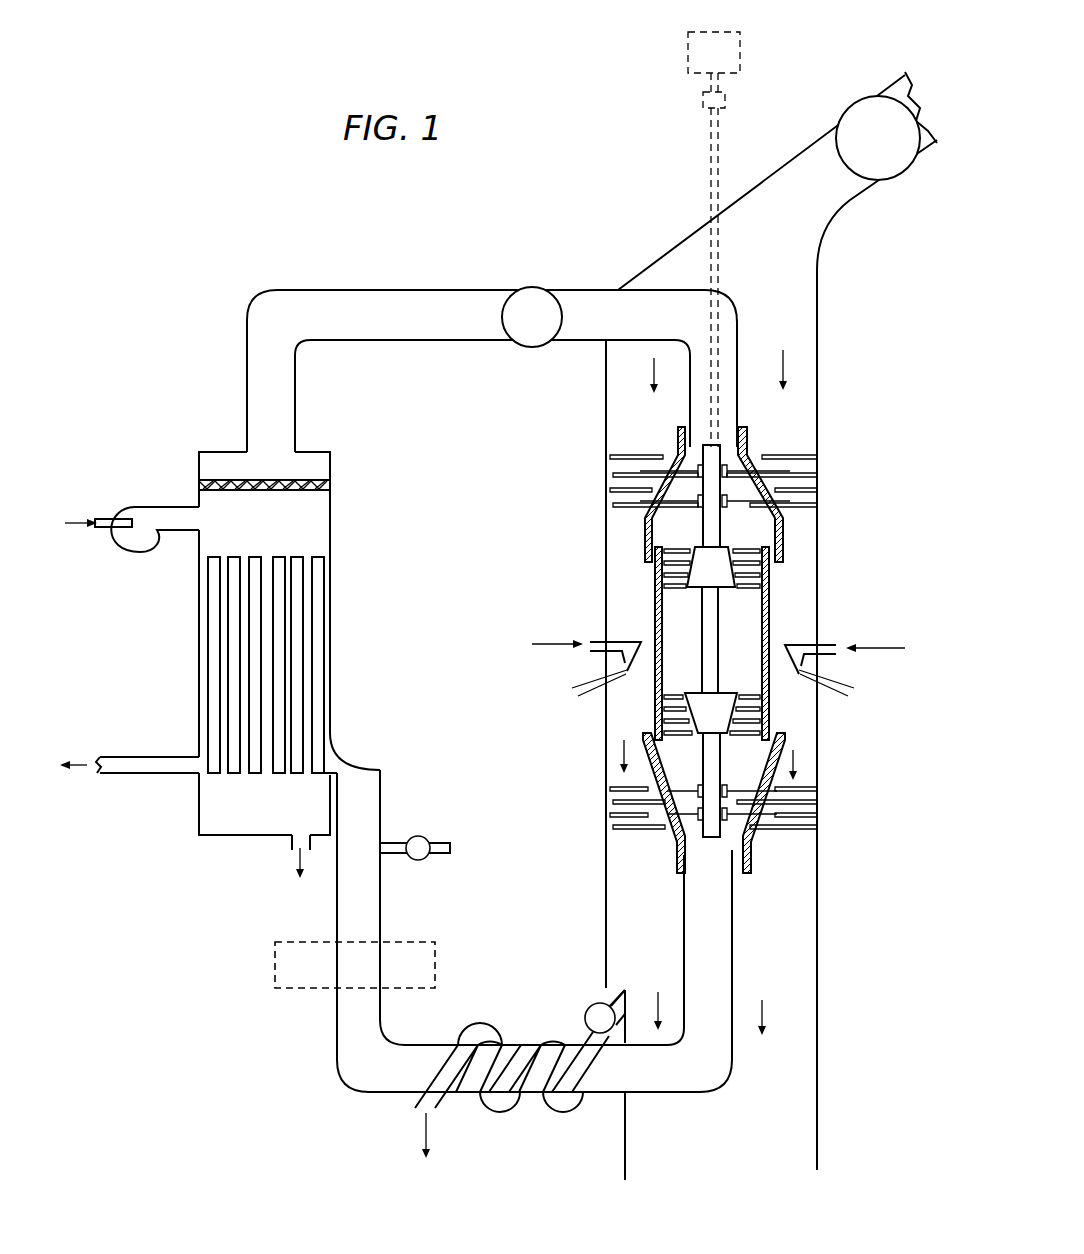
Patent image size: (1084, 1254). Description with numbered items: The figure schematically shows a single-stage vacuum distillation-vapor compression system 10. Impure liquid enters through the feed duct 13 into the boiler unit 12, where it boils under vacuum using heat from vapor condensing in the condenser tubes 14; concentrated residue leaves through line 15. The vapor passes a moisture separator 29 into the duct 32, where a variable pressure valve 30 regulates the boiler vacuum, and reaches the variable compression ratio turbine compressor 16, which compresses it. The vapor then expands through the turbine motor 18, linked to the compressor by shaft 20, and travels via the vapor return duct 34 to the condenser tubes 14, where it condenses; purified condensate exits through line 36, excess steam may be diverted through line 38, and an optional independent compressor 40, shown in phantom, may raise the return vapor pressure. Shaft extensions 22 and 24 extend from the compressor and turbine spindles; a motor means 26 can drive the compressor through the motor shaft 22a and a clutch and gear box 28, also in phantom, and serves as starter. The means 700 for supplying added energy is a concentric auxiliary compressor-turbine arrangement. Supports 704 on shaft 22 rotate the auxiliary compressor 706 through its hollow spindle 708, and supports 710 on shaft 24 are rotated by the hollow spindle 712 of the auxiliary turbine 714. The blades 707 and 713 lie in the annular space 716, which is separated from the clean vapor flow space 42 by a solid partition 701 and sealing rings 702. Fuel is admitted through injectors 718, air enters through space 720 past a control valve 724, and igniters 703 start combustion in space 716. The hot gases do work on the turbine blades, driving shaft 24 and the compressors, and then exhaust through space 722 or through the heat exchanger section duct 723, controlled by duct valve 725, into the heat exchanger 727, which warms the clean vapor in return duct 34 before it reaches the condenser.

The vacuum distillation-vapor compression system 10 is at (341, 277).
The boiler unit 12 is at (323, 537).
The feed duct 13 is at (178, 517).
The condenser tubes 14 is at (318, 650).
The line 15 is at (290, 840).
The turbine compressor 16 is at (665, 560).
The turbine motor 18 is at (670, 707).
The shaft 20 is at (708, 620).
The shaft extension 22 is at (713, 522).
The motor shaft 22a is at (722, 150).
The shaft extension member 24 is at (713, 760).
The motor means 26 is at (741, 40).
The clutch and gear box 28 is at (727, 98).
The moisture separator 29 is at (320, 479).
The variable pressure valve 30 is at (529, 288).
The duct 32 is at (378, 342).
The vapor return duct 34 is at (363, 1078).
The line 36 is at (183, 777).
The line 38 is at (397, 840).
The independent compressor 40 is at (435, 970).
The clean vapor flow space 42 is at (725, 632).
The means for supplying energy 700 is at (818, 384).
The solid partition 701 is at (660, 628).
The sealing rings 702 is at (686, 432).
The igniters 703 is at (583, 688).
The supports 704 is at (645, 517).
The auxiliary compressor 706 is at (810, 478).
The blades 707 is at (810, 512).
The hollow spindle 708 is at (688, 470).
The supports 710 is at (678, 813).
The hollow spindle 712 is at (665, 825).
The blades 713 is at (803, 833).
The auxiliary turbine 714 is at (812, 800).
The annular space 716 is at (608, 592).
The injectors 718 is at (630, 648).
The space 720 is at (748, 280).
The space 722 is at (640, 959).
The heat exchanger section duct 723 is at (605, 993).
The control valve 724 is at (890, 181).
The duct valve 725 is at (585, 1010).
The heat exchanger 727 is at (502, 1103).